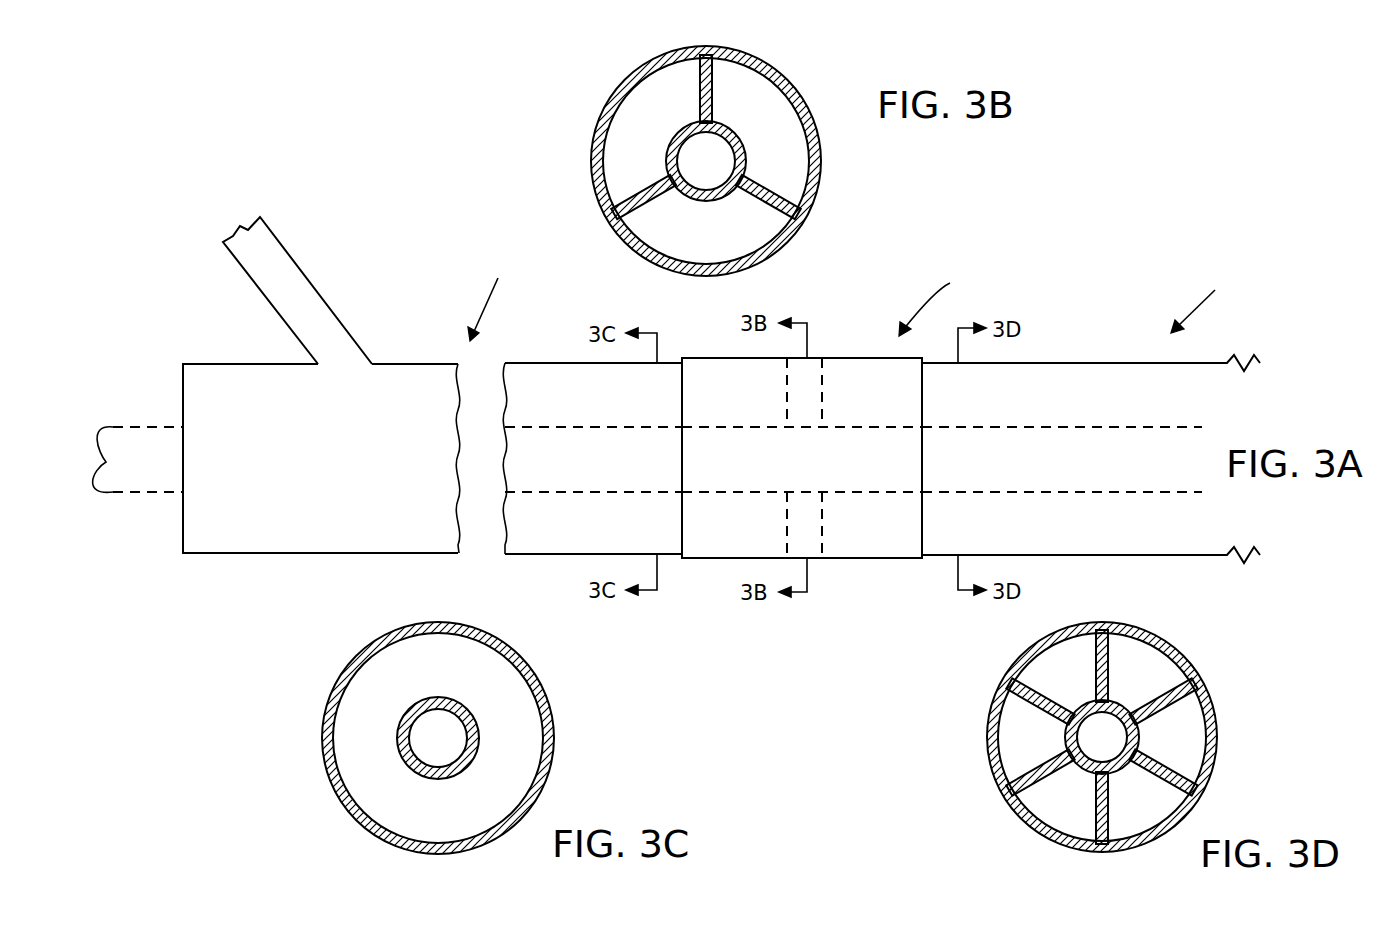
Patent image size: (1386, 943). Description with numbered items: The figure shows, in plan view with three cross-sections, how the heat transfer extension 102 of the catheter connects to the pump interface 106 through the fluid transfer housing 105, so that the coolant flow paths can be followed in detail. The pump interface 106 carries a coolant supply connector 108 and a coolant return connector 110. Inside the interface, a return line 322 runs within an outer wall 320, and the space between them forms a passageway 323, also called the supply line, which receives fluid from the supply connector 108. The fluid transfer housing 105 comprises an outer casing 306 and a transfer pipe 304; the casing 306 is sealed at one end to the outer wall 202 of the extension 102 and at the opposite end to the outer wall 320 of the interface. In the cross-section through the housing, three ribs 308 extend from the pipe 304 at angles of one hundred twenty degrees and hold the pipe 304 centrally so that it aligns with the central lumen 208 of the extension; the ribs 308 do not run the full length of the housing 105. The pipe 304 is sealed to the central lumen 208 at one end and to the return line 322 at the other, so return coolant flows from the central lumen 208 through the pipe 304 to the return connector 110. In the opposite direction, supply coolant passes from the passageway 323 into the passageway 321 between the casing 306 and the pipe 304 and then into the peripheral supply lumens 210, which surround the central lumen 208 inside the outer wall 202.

In FIG. 3A, the heat transfer extension 102 is at (1211, 299).
In FIG. 3A, the fluid transfer housing 105 is at (945, 303).
In FIG. 3A, the pump interface 106 is at (503, 286).
In FIG. 3A, the coolant supply connector 108 is at (313, 287).
In FIG. 3A, the coolant return connector 110 is at (152, 492).
In FIG. 3A, the outer wall 202 is at (1082, 363).
In FIG. 3D, the outer wall 202 is at (1203, 688).
In FIG. 3A, the central lumen 208 is at (1062, 459).
In FIG. 3D, the central lumen 208 is at (1102, 737).
In FIG. 3D, the peripheral lumens 210 is at (1101, 737).
In FIG. 3A, the transfer pipe 304 is at (858, 428).
In FIG. 3B, the transfer pipe 304 is at (743, 133).
In FIG. 3A, the outer casing 306 is at (882, 560).
In FIG. 3B, the outer casing 306 is at (658, 66).
In FIG. 3A, the ribs 308 is at (807, 395).
In FIG. 3B, the ribs 308 is at (667, 143).
In FIG. 3A, the outer wall 320 is at (545, 363).
In FIG. 3C, the outer wall 320 is at (382, 645).
In FIG. 3A, the passageway 321 is at (740, 358).
In FIG. 3A, the return line 322 is at (632, 492).
In FIG. 3C, the return line 322 is at (456, 697).
In FIG. 3A, the passageway 323 is at (284, 492).
In FIG. 3C, the passageway 323 is at (505, 752).